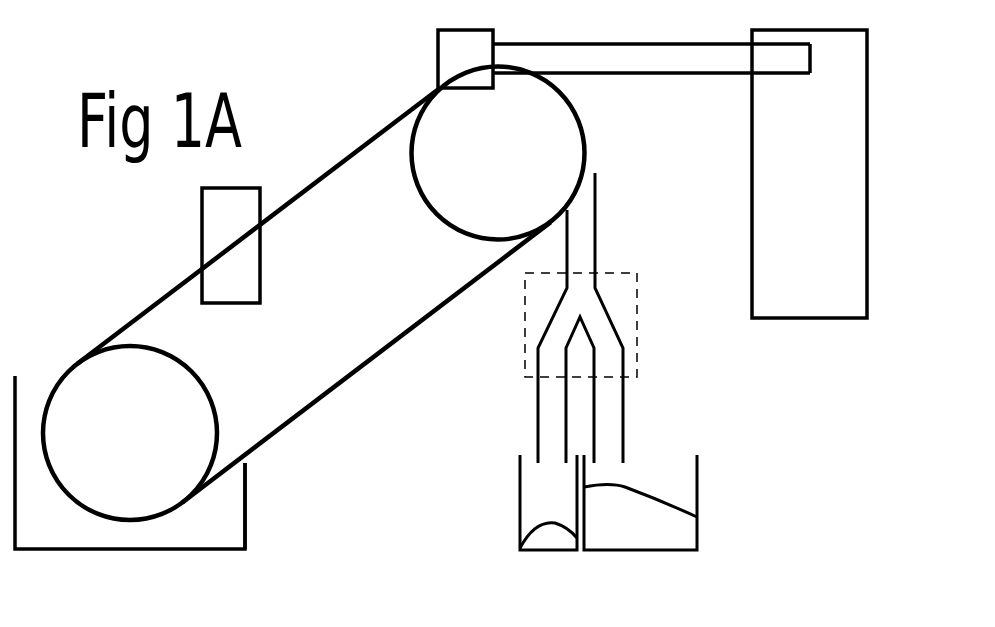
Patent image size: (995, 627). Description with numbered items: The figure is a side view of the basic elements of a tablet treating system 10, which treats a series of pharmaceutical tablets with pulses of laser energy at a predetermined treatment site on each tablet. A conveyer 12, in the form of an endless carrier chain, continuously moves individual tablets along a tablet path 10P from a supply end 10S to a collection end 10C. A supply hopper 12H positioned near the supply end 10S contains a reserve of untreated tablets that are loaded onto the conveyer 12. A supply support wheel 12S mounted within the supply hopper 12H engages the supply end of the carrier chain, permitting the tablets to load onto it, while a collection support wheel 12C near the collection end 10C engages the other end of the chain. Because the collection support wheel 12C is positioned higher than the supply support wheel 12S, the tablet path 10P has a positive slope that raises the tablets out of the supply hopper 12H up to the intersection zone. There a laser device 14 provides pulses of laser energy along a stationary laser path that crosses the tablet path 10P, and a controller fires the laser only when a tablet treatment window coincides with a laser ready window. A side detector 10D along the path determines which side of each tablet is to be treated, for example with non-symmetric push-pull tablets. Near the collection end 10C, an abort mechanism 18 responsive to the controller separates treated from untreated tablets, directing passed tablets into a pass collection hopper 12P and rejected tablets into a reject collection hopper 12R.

The tablet treating system 10 is at (108, 238).
The tablet path 10P is at (258, 226).
The side detector 10D is at (252, 270).
The collection end 10C is at (624, 84).
The supply end 10S is at (130, 462).
The conveyer 12 is at (313, 408).
The collection support wheel 12C is at (458, 210).
The supply support wheel 12S is at (193, 395).
The supply hopper 12H is at (233, 540).
The reject collection hopper 12R is at (527, 527).
The pass collection hopper 12P is at (690, 542).
The laser device 14 is at (775, 307).
The abort mechanism 18 is at (627, 295).